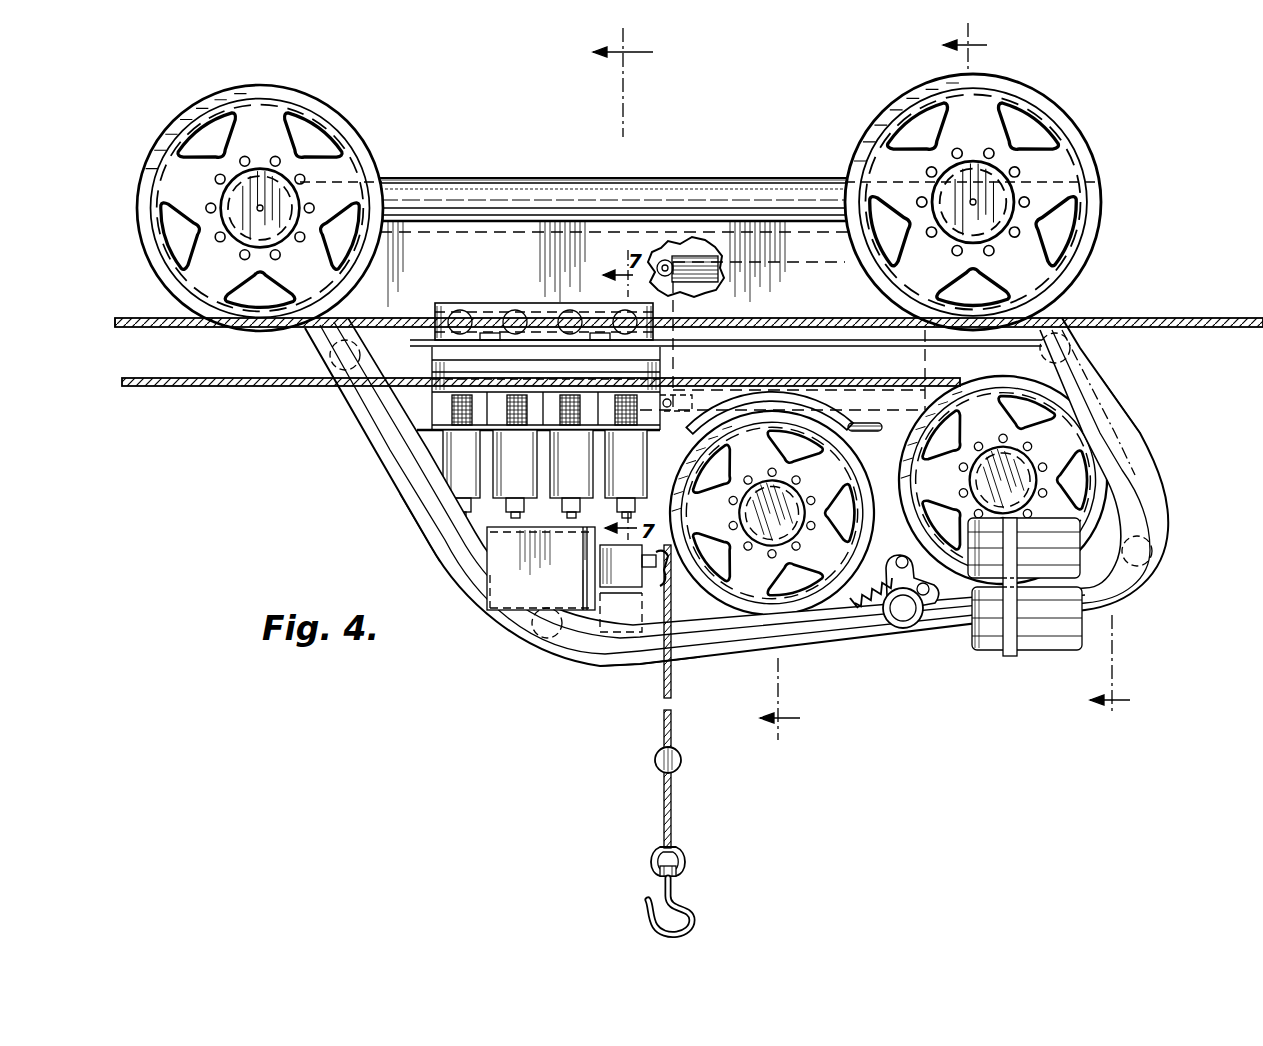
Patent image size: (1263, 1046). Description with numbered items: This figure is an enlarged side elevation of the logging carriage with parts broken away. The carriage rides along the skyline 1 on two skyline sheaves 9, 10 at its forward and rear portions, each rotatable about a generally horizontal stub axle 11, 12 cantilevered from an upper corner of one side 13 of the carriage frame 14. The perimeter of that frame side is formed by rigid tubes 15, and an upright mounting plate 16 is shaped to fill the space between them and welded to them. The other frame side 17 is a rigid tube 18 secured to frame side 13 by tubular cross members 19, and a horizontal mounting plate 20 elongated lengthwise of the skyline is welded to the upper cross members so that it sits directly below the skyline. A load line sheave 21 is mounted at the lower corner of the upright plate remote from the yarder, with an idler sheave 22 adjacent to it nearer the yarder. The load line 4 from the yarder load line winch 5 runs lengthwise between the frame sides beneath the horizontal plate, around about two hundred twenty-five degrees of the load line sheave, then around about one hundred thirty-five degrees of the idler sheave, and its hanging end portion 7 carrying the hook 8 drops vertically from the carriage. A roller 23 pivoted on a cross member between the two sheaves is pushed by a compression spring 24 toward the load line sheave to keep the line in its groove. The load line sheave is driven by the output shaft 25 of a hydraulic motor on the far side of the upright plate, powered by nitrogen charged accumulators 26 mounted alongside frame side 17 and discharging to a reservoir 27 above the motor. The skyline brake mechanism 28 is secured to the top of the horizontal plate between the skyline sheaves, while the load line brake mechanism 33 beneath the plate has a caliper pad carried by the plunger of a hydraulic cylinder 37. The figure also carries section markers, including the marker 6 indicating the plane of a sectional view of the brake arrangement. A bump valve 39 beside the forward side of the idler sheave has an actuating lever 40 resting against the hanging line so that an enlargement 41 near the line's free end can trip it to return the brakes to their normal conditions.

The skyline 1 is at (131, 328).
The load line 4 is at (201, 388).
The load line winch 5 is at (1039, 373).
The section line 6- 6 is at (696, 388).
The hanging end portion of load line 7 is at (663, 728).
The hook 8 is at (652, 907).
The skyline sheave 9 is at (258, 96).
The skyline sheave 10 is at (1007, 100).
The stub axle 11 is at (240, 215).
The stub axle 12 is at (1093, 174).
The frame side 13 is at (697, 178).
The carriage frame 14 is at (338, 408).
The rigid tubes 15 is at (502, 197).
The upright mounting plate 16 is at (600, 247).
The frame side 17 is at (552, 657).
The rigid tube 18 is at (447, 548).
The tubular cross members 19 is at (328, 355).
The horizontal mounting plate 20 is at (810, 342).
The load line sheave 21 is at (1065, 442).
The idler sheave 22 is at (840, 460).
The roller 23 is at (857, 607).
The compression spring 24 is at (885, 617).
The output shaft 25 is at (1123, 487).
The accumulators 26 is at (1047, 557).
The reservoir 27 is at (717, 279).
The skyline brake mechanism 28 is at (498, 298).
The load line brake mechanism 33 is at (420, 407).
The hydraulic cylinder 37 is at (510, 480).
The bump valve 39 is at (623, 575).
The bump valve actuating lever 40 is at (674, 585).
The enlargement 41 is at (679, 762).